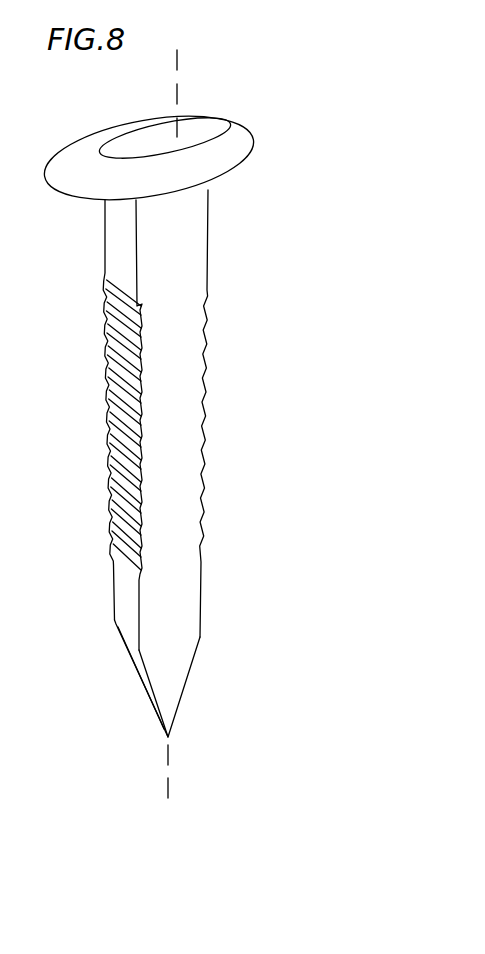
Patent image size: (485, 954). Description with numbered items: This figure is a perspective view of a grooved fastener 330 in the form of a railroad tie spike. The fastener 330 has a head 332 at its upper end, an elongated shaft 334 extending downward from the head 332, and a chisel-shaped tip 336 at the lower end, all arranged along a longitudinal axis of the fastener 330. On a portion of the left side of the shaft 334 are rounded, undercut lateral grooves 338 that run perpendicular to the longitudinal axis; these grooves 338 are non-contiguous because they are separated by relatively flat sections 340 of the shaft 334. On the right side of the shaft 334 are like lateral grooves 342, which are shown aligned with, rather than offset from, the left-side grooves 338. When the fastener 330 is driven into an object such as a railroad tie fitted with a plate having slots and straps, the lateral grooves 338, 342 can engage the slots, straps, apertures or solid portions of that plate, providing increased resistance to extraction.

The grooved fastener 330 is at (228, 82).
The head 332 is at (240, 147).
The shaft 334 is at (177, 417).
The chisel-shaped tip 336 is at (158, 723).
The lateral grooves 338 is at (120, 308).
The flat sections 340 is at (112, 322).
The lateral grooves 342 is at (205, 322).